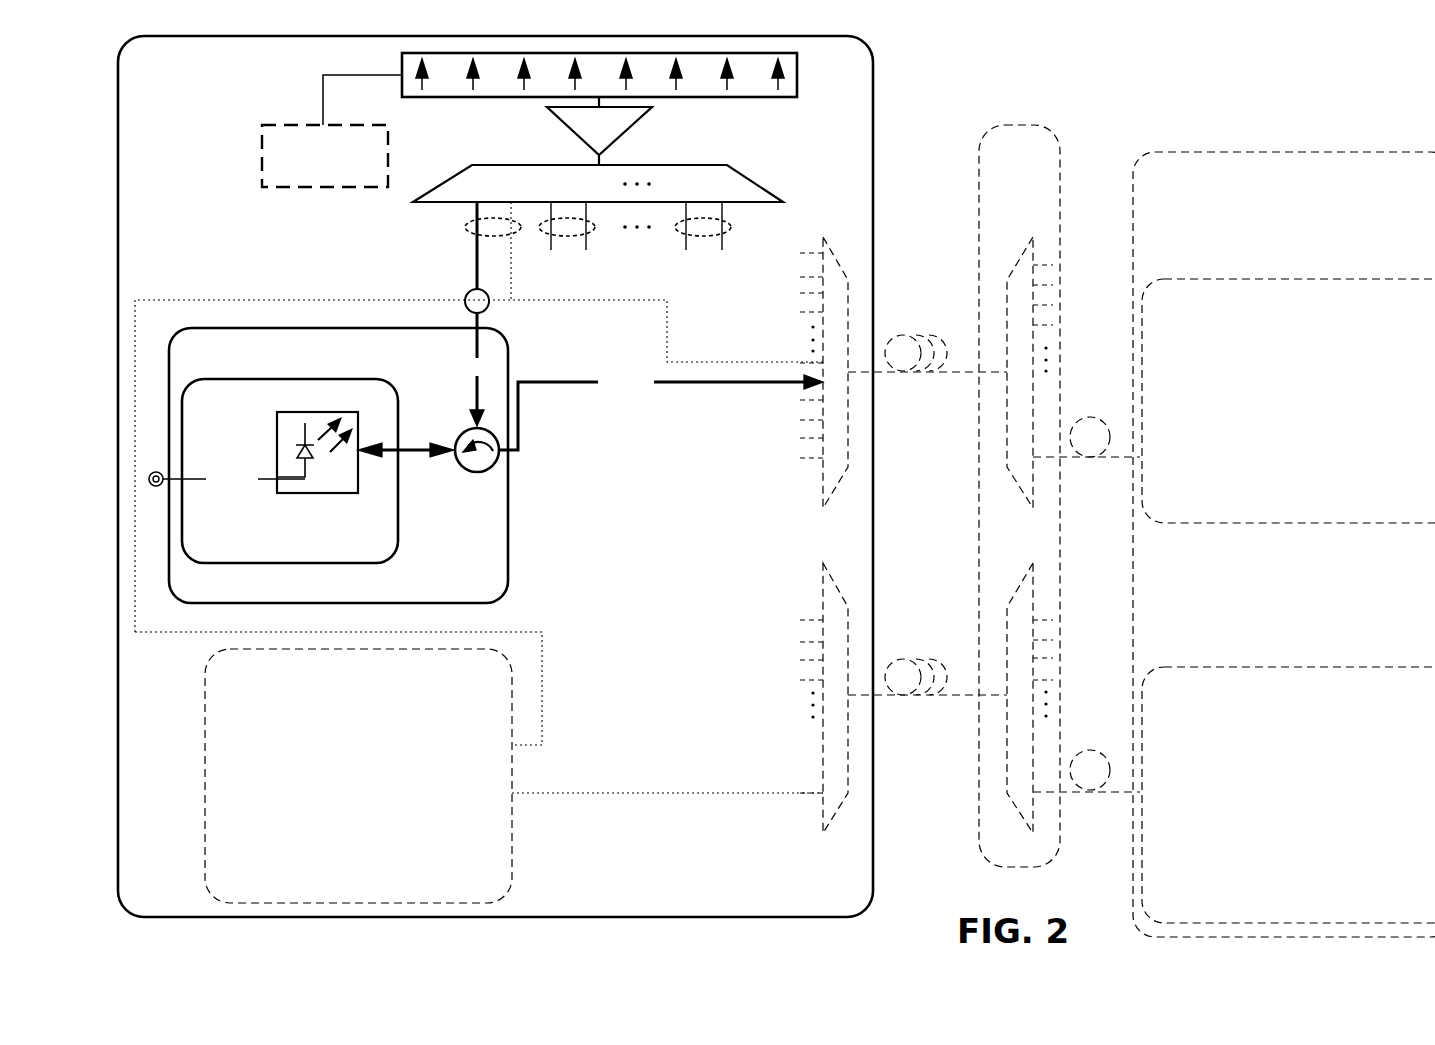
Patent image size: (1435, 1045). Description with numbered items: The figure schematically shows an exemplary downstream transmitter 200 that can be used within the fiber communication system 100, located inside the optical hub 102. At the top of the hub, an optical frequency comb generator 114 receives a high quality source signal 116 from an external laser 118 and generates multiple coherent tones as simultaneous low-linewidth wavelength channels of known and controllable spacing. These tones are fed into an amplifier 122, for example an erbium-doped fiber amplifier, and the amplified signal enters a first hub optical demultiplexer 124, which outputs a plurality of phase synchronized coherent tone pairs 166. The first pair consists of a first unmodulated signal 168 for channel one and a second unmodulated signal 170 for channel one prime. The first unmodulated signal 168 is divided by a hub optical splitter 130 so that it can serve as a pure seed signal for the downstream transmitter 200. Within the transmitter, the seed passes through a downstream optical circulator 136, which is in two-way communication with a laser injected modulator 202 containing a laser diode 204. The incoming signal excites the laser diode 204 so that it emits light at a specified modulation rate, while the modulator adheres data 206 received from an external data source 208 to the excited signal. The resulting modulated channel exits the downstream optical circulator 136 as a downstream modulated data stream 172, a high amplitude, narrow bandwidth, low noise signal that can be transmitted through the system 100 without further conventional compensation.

The fiber communication system 100 is at (1150, 88).
The optical hub 102 is at (495, 476).
The optical frequency comb generator 114 is at (798, 75).
The high quality source signal 116 is at (323, 92).
The external laser 118 is at (325, 156).
The amplifier 122 is at (599, 131).
The first hub optical demultiplexer 124 is at (760, 183).
The coherent tone pair 166 is at (440, 228).
The first unmodulated signal 168 is at (477, 263).
The hub optical splitter 130 is at (489, 301).
The second unmodulated signal 170 is at (667, 325).
The downstream modulated data stream 172 is at (708, 385).
The downstream optical circulator 136 is at (477, 472).
The downstream transmitter 200 is at (338, 465).
The laser injected modulator 202 is at (290, 471).
The laser diode 204 is at (277, 443).
The data 206 is at (205, 481).
The external data source 208 is at (152, 486).